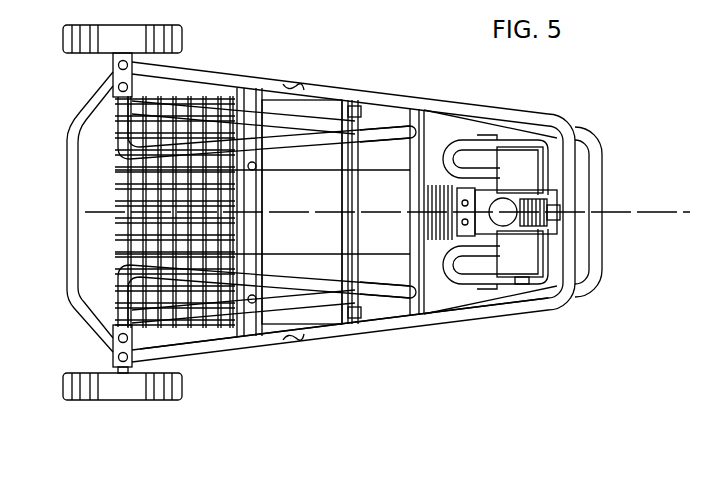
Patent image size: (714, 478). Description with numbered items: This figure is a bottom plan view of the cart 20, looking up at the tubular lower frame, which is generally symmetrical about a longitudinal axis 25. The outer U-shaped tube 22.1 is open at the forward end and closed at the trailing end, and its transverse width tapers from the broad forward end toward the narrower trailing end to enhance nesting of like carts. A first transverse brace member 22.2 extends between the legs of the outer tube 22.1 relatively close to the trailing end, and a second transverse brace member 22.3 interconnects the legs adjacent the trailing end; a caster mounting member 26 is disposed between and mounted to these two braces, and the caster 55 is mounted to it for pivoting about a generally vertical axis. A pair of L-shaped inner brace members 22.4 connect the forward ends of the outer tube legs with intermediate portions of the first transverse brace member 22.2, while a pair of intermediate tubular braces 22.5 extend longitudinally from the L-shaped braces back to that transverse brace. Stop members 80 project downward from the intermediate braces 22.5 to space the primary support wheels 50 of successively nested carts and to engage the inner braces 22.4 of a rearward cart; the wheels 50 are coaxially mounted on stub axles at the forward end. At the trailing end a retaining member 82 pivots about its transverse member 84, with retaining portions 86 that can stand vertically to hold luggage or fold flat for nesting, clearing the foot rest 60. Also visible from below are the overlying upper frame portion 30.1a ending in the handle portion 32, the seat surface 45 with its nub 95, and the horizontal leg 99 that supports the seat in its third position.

The cart 20 is at (186, 420).
The primary support wheels 50 is at (130, 27).
The outer U-shaped tube 22.1 is at (447, 102).
The second transverse brace member 22.3 is at (567, 157).
The transverse member 84 is at (558, 153).
The handle portion 32 is at (601, 254).
The longitudinal axis 25 is at (633, 212).
The foot rest 60 is at (66, 214).
The L-shaped inner brace members 22.4 is at (117, 128).
The intermediate tubular braces 22.5 is at (388, 136).
The horizontal leg 99 is at (328, 112).
The nub 95 is at (289, 84).
The stop members 80 is at (256, 167).
The seat surface 45 is at (323, 228).
The first transverse brace member 22.2 is at (410, 213).
The retaining portions 86 is at (453, 154).
The retaining member 82 is at (522, 284).
The caster mounting member 26 is at (466, 190).
The caster 55 is at (552, 211).
The upper frame portion 30.1a is at (247, 358).